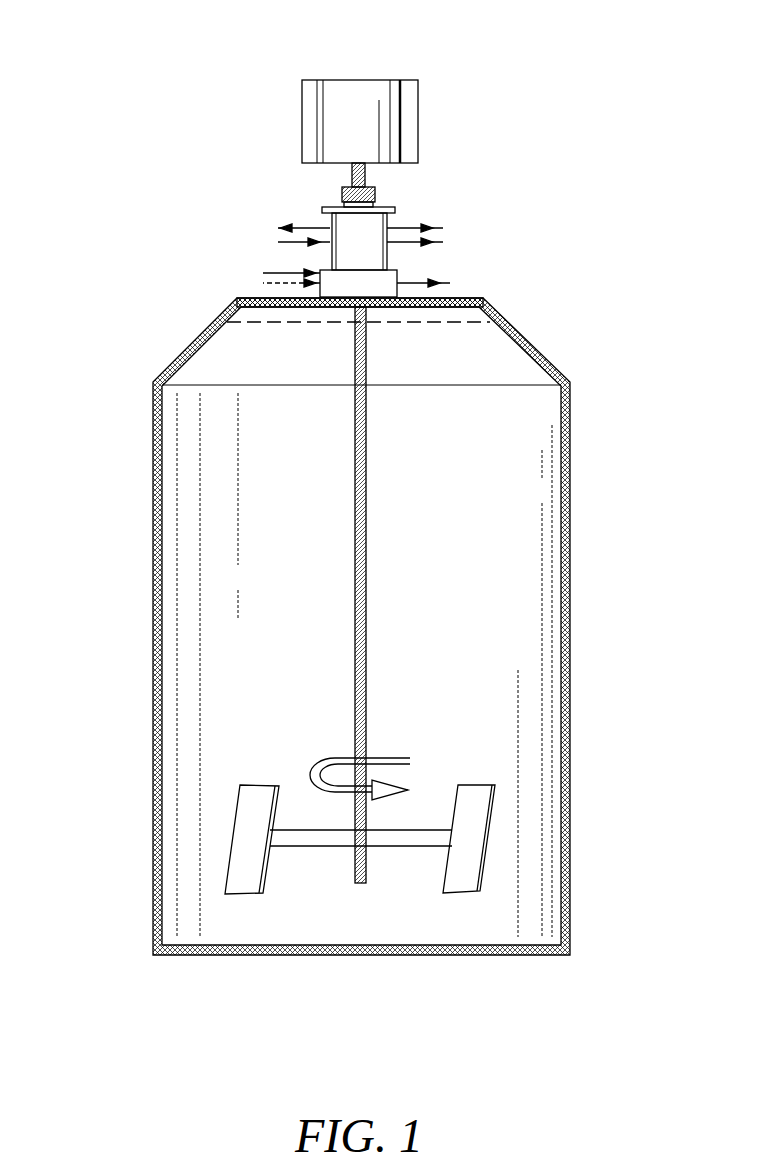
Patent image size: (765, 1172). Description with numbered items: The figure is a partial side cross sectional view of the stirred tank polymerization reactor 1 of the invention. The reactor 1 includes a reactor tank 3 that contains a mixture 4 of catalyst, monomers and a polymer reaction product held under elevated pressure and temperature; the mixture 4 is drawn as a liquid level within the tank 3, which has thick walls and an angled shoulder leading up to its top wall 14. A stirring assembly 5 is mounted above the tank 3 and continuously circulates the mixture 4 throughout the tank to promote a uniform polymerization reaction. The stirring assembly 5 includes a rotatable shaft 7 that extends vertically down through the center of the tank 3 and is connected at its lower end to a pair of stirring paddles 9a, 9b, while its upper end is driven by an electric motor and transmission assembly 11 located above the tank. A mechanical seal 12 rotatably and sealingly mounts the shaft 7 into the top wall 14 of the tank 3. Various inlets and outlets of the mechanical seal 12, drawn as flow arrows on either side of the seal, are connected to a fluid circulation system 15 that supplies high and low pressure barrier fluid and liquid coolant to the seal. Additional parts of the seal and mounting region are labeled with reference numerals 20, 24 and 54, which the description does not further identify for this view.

The stirred tank polymerization reactor 1 is at (155, 122).
The reactor tank 3 is at (153, 604).
The mixture 4 is at (477, 323).
The stirring assembly 5 is at (513, 163).
The rotatable shaft 7 is at (376, 655).
The stirring paddle 9a is at (262, 795).
The stirring paddle 9b is at (477, 792).
The electric motor and transmission assembly 11 is at (360, 163).
The mechanical seal 12 is at (375, 262).
The top wall 14 is at (470, 300).
The fluid circulation system 15 is at (240, 222).
The mounting flange 20 is at (400, 217).
The air flow 24 is at (400, 275).
The coupling 54 is at (327, 212).